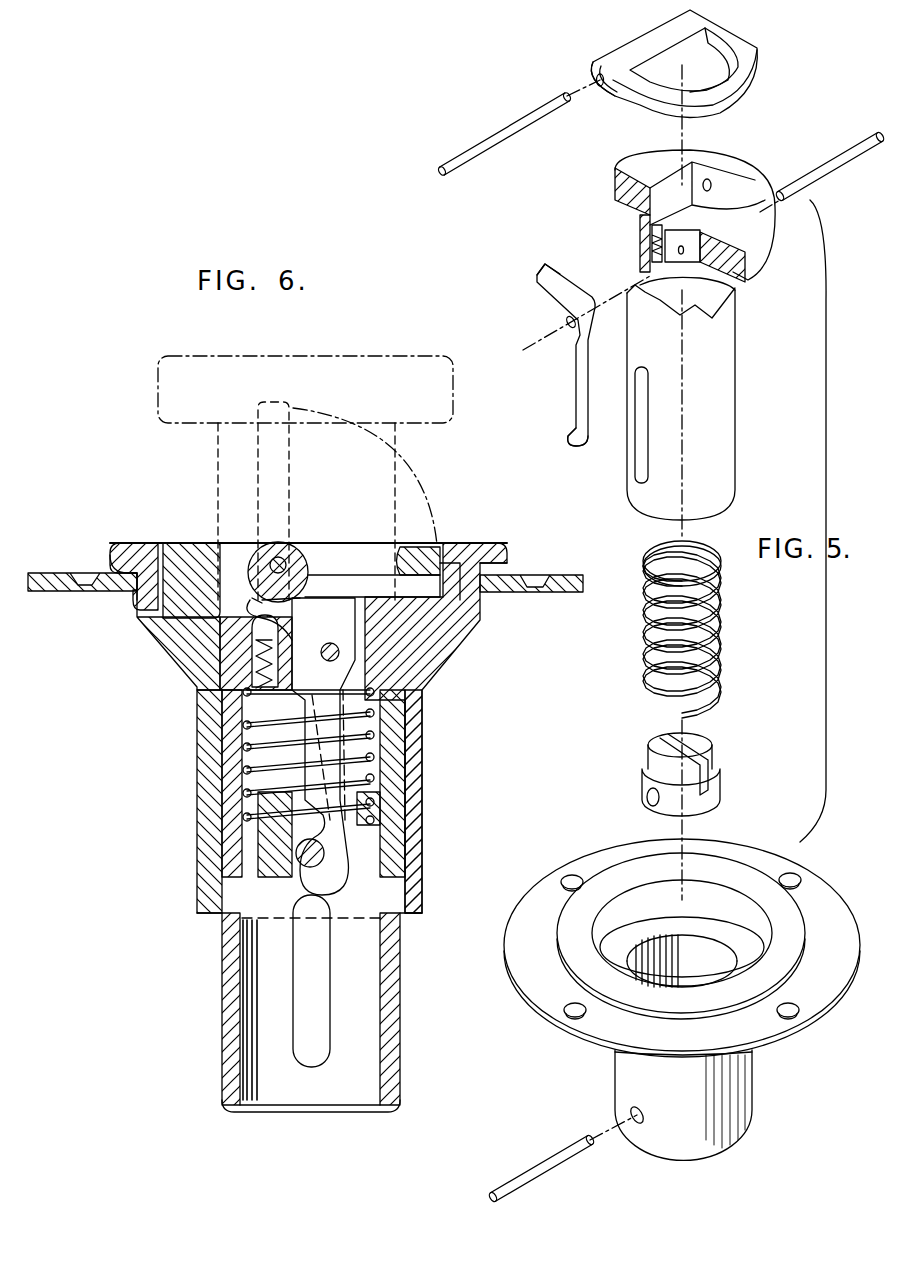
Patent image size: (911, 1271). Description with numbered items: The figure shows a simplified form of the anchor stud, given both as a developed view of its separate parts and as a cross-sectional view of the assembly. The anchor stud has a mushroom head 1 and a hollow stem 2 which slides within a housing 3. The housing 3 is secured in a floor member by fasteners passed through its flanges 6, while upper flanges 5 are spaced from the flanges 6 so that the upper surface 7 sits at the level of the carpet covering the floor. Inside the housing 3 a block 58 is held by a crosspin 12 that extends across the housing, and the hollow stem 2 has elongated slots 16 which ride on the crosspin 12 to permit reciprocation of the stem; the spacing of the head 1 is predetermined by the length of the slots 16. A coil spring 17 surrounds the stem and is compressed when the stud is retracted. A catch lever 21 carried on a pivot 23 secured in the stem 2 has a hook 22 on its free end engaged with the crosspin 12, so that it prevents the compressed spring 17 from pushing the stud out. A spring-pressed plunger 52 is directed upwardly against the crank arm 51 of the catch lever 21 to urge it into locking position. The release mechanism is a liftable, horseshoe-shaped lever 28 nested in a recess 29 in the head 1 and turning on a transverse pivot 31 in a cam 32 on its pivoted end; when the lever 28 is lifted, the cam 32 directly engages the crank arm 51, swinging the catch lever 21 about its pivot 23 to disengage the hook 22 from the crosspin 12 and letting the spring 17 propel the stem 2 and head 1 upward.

In FIG. 6, the head 1 is at (447, 392).
In FIG. 5, the head 1 is at (762, 242).
In FIG. 6, the hollow stem 2 is at (390, 746).
In FIG. 5, the hollow stem 2 is at (720, 353).
In FIG. 6, the housing 3 is at (410, 772).
In FIG. 5, the housing 3 is at (742, 1090).
In FIG. 6, the upper flanges 5 is at (505, 562).
In FIG. 5, the upper flanges 5 is at (805, 916).
In FIG. 6, the flanges 6 is at (570, 580).
In FIG. 5, the flanges 6 is at (850, 952).
In FIG. 6, the upper surface 7 is at (135, 543).
In FIG. 5, the upper surface 7 is at (795, 950).
In FIG. 6, the crosspin 12 is at (322, 855).
In FIG. 5, the crosspin 12 is at (545, 1180).
In FIG. 6, the elongated slots 16 is at (322, 982).
In FIG. 5, the elongated slots 16 is at (640, 440).
In FIG. 6, the coil spring 17 is at (247, 752).
In FIG. 5, the coil spring 17 is at (645, 650).
In FIG. 6, the catch lever 21 is at (330, 732).
In FIG. 5, the catch lever 21 is at (570, 366).
In FIG. 5, the hook 22 is at (570, 440).
In FIG. 6, the pivot 23 is at (329, 643).
In FIG. 5, the pivot 23 is at (826, 180).
In FIG. 6, the lever 28 is at (422, 548).
In FIG. 5, the lever 28 is at (752, 67).
In FIG. 6, the recess 29 is at (452, 562).
In FIG. 5, the recess 29 is at (727, 193).
In FIG. 6, the pivot 31 is at (280, 558).
In FIG. 5, the pivot 31 is at (540, 118).
In FIG. 6, the cam 32 is at (292, 552).
In FIG. 5, the cam 32 is at (656, 33).
In FIG. 6, the crank arm 51 is at (300, 605).
In FIG. 5, the crank arm 51 is at (555, 276).
In FIG. 6, the spring-pressed plunger 52 is at (255, 640).
In FIG. 5, the spring-pressed plunger 52 is at (657, 243).
In FIG. 6, the block 58 is at (258, 856).
In FIG. 5, the block 58 is at (722, 779).